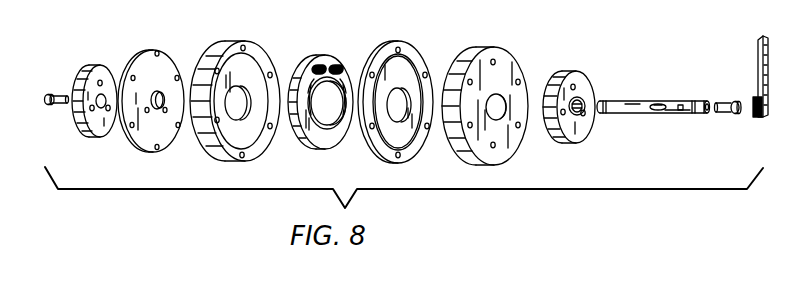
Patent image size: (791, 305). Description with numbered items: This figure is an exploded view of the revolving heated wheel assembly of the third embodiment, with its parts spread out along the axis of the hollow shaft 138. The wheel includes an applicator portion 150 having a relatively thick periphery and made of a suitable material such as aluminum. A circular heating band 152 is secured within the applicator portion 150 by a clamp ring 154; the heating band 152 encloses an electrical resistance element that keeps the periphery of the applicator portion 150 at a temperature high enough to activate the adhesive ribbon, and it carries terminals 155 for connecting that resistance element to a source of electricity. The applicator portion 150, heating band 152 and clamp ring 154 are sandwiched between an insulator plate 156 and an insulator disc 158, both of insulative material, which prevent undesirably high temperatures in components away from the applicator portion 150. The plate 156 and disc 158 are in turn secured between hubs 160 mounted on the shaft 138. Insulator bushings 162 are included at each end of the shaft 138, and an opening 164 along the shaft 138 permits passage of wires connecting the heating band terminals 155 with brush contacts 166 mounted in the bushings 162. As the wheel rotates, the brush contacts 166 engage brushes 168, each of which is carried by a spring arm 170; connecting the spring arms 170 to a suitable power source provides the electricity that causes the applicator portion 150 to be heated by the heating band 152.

The shaft 138 is at (620, 102).
The applicator portion 150 is at (232, 56).
The heating band 152 is at (327, 62).
The clamp ring 154 is at (403, 52).
The terminals 155 is at (314, 67).
The insulator plate 156 is at (148, 66).
The insulator disc 158 is at (477, 54).
The hubs 160 is at (98, 63).
The insulator bushings 162 is at (600, 101).
The opening 164 is at (658, 104).
The brush contacts 166 is at (59, 95).
The brushes 168 is at (756, 105).
The spring arm 170 is at (760, 64).